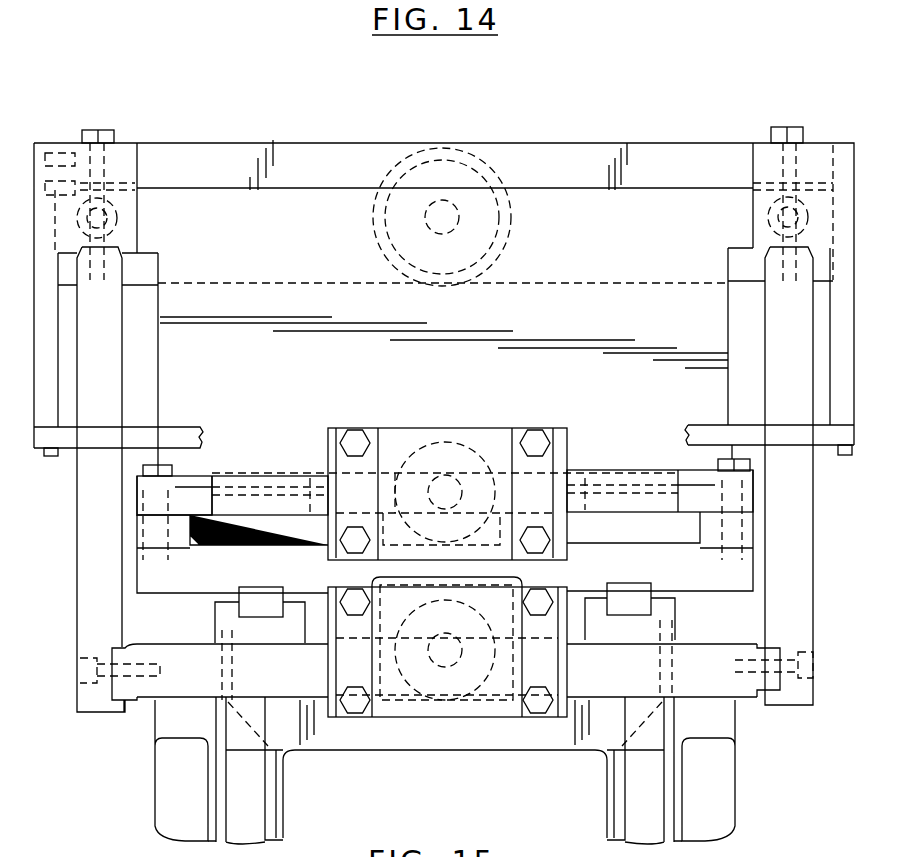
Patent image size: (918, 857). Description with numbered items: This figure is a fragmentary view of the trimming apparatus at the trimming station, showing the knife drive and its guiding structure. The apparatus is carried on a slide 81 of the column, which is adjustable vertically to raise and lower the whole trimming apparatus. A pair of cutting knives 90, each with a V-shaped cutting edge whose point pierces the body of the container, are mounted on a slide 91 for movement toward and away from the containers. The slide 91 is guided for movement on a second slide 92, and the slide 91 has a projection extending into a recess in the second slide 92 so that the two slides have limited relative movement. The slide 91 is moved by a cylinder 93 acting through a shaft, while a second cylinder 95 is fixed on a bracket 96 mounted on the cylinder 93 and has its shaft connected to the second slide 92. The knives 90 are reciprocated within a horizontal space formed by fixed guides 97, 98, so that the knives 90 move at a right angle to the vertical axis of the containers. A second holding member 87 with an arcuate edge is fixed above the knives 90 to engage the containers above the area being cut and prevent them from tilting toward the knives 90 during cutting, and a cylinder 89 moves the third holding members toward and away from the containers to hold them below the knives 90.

The slide 81 is at (612, 792).
The second holding member 87 is at (186, 438).
The cylinder 89 is at (478, 164).
The cutting knives 90 is at (250, 490).
The slide 91 is at (201, 578).
The second slide 92 is at (676, 624).
The cylinder 93 is at (456, 438).
The second cylinder 95 is at (440, 702).
The bracket 96 is at (568, 570).
The fixed guide 97 is at (194, 485).
The fixed guide 98 is at (198, 508).